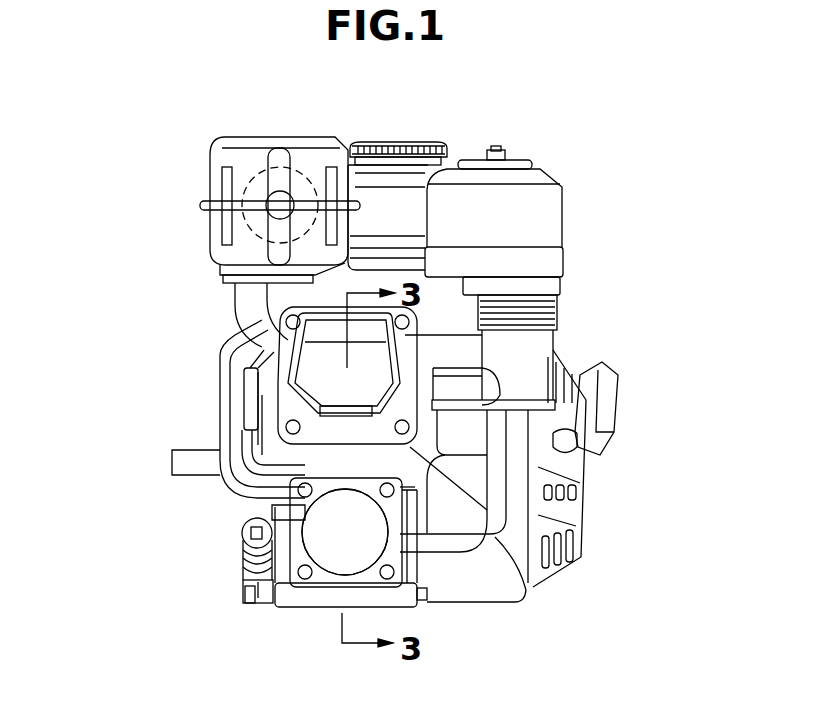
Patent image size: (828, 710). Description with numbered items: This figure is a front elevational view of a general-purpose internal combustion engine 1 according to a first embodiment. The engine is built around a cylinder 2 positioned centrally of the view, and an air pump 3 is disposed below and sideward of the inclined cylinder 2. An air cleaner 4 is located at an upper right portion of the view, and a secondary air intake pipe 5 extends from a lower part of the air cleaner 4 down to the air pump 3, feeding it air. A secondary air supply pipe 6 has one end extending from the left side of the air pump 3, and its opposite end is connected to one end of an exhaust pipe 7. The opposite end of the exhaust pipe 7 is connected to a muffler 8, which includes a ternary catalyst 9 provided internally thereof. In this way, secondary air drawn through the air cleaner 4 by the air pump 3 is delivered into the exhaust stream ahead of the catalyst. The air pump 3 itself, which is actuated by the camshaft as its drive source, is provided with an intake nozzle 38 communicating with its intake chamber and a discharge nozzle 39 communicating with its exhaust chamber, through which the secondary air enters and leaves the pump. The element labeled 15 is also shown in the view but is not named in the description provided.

The general-purpose internal combustion engine 1 is at (143, 192).
The cylinder 2 is at (247, 388).
The air pump 3 is at (285, 560).
The air cleaner 4 is at (562, 222).
The secondary air intake pipe 5 is at (525, 585).
The secondary air supply pipe 6 is at (220, 395).
The exhaust pipe 7 is at (233, 294).
The muffler 8 is at (232, 137).
The ternary catalyst 9 is at (296, 163).
The fuel pipe connector 15 is at (180, 450).
The intake nozzle 38 is at (385, 578).
The discharge nozzle 39 is at (243, 512).